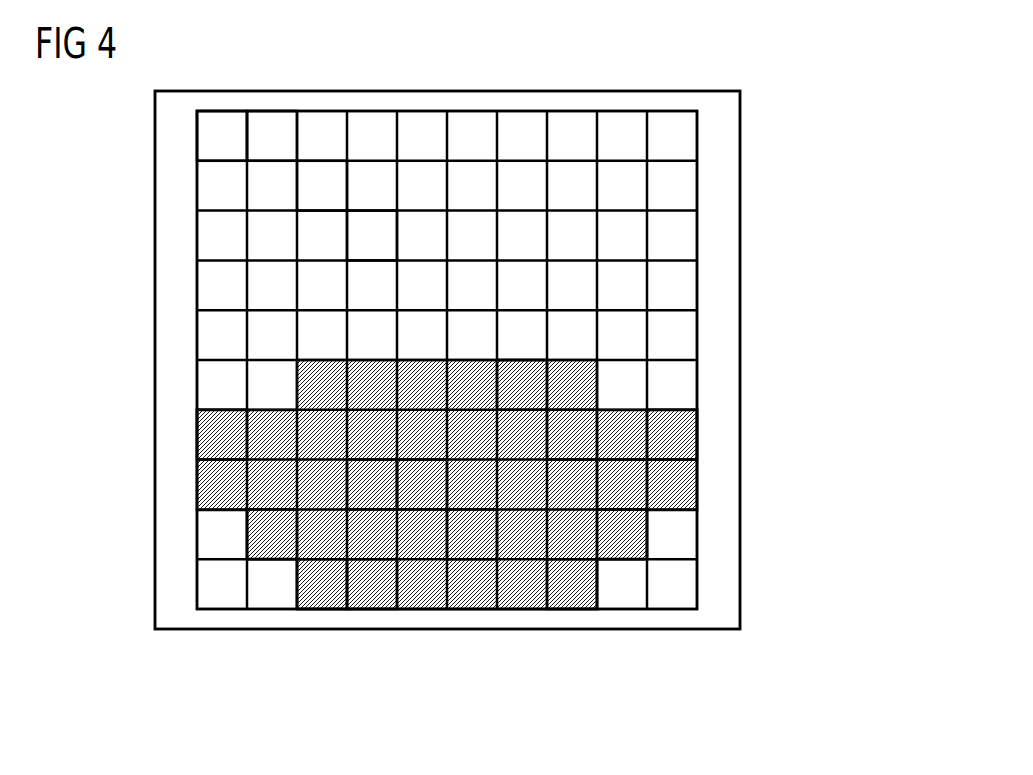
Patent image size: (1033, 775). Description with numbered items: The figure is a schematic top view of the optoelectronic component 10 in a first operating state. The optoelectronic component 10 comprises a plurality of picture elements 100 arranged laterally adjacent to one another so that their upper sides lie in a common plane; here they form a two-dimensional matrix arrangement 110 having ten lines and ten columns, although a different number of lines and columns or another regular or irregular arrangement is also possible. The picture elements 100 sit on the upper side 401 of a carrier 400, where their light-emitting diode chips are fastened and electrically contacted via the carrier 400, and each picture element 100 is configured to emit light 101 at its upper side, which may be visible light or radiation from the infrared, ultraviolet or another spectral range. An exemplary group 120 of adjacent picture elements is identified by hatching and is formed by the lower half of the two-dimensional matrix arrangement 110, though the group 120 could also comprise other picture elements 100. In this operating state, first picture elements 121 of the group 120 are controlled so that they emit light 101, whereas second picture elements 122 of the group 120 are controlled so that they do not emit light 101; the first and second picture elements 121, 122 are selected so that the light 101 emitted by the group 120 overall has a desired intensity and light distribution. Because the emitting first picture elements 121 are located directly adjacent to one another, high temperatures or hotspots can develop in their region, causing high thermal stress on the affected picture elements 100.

The optoelectronic component 10 is at (758, 68).
The picture elements 100 is at (384, 228).
The two-dimensional matrix arrangement 110 is at (384, 228).
The light 101 is at (532, 378).
The group of adjacent picture elements 120 is at (703, 360).
The first picture elements 121 is at (375, 485).
The second picture elements 122 is at (220, 543).
The carrier 400 is at (693, 91).
The upper side 401 is at (719, 118).